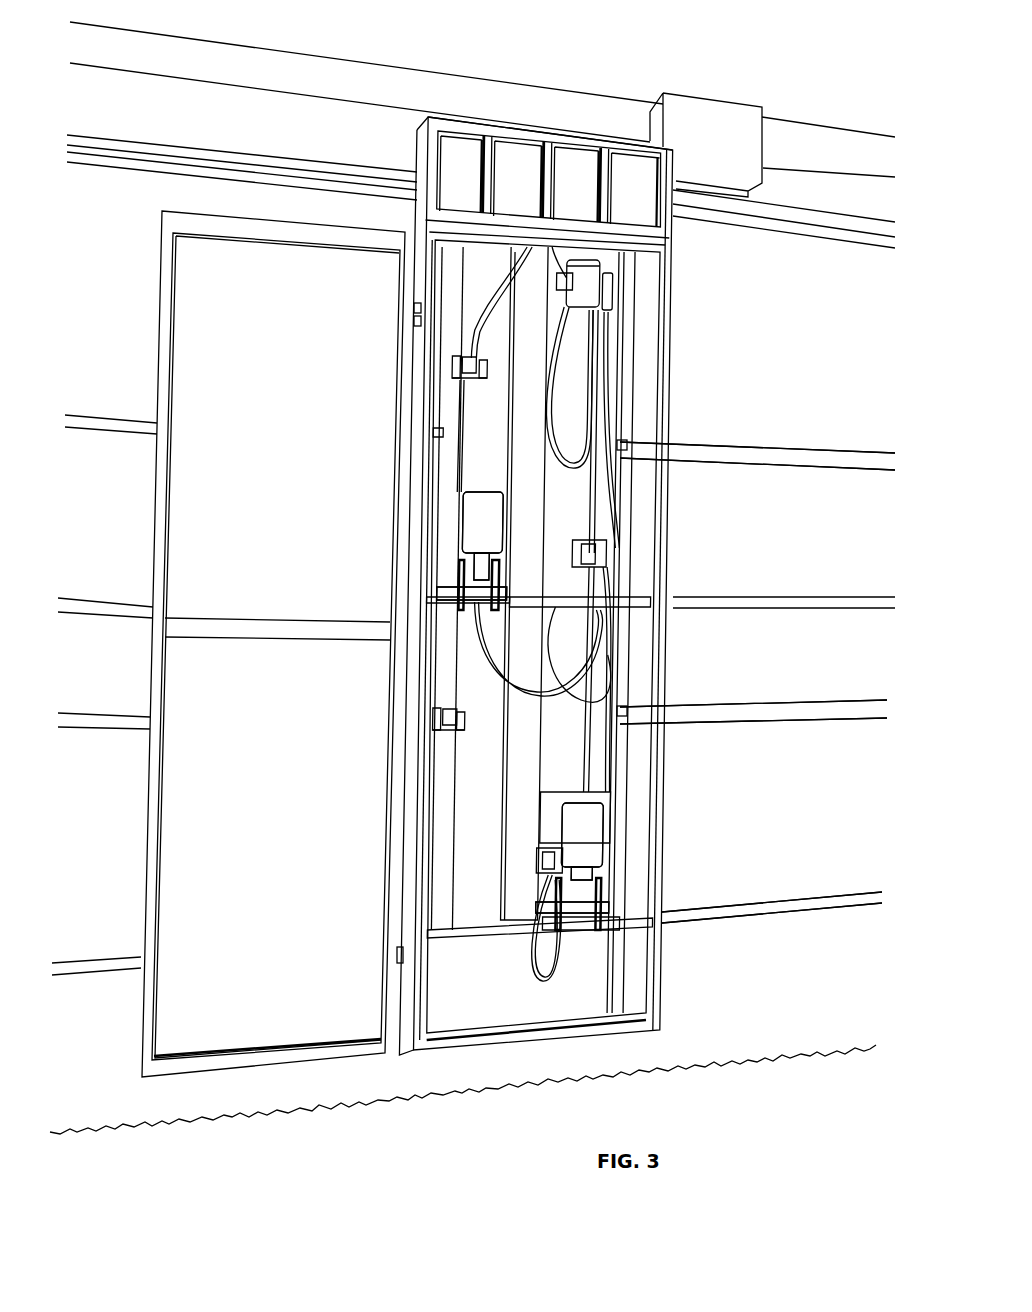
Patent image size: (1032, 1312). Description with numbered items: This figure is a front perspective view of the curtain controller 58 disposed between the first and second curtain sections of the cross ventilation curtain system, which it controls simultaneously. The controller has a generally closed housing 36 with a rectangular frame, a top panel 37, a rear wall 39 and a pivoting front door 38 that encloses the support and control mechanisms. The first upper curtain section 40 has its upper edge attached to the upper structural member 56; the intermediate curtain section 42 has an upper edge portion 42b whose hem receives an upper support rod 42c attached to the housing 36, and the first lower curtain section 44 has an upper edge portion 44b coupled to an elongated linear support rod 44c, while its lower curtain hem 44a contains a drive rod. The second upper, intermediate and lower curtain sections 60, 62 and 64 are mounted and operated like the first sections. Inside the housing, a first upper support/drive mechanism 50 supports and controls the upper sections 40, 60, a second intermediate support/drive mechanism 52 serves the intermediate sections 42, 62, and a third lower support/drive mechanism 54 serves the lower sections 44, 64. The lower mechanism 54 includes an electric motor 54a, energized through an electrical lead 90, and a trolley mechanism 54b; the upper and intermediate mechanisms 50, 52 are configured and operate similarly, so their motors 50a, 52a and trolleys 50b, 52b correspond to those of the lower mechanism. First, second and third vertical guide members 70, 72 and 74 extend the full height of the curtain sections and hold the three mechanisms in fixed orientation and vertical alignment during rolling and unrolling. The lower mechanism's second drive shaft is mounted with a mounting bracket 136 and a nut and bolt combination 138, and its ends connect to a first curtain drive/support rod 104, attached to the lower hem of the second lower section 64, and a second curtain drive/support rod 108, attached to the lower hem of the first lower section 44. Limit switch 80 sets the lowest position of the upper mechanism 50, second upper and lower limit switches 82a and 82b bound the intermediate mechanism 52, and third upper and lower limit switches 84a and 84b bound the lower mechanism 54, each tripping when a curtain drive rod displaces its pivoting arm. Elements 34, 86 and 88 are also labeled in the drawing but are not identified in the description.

The lower wall section 34 is at (816, 1029).
The housing 36 is at (480, 1045).
The top panel 37 is at (430, 162).
The pivoting front door 38 is at (150, 876).
The rear wall 39 is at (474, 809).
The first upper curtain section 40 is at (780, 215).
The intermediate curtain section 42 is at (822, 549).
The upper edge portion 42b is at (751, 462).
The upper support rod 42c is at (618, 445).
The first lower curtain section 44 is at (822, 838).
The curtain hem 44a is at (727, 908).
The upper edge portion 44b is at (773, 714).
The support rod 44c is at (620, 710).
The first upper support/drive mechanism 50 is at (624, 284).
The upper valve actuator 50a is at (597, 265).
The upper valve body 50b is at (607, 312).
The second intermediate support/drive mechanism 52 is at (452, 540).
The middle valve actuator 52a is at (478, 516).
The middle valve body 52b is at (455, 581).
The third lower support/drive mechanism 54 is at (624, 843).
The electric motor 54a is at (603, 820).
The trolley mechanism 54b is at (605, 877).
The upper structural member 56 is at (284, 130).
The curtain controller 58 is at (418, 1068).
The second upper curtain section 60 is at (103, 152).
The second intermediate curtain section 62 is at (112, 524).
The second lower curtain section 64 is at (99, 802).
The first vertical guide member 70 is at (433, 391).
The second vertical guide member 72 is at (520, 436).
The third vertical guide member 74 is at (622, 346).
The limit switch 80 is at (602, 550).
The second upper limit switch 82a is at (455, 366).
The second lower limit switch 82b is at (440, 721).
The third upper limit switch 84a is at (566, 608).
The third lower limit switch 84b is at (542, 862).
The cable 86 is at (522, 302).
The junction box 88 is at (725, 150).
The electrical lead 90 is at (548, 960).
The first curtain drive/support rod 104 is at (448, 937).
The second curtain drive/support rod 108 is at (601, 932).
The mounting bracket 136 is at (443, 610).
The nut and bolt combination 138 is at (603, 600).